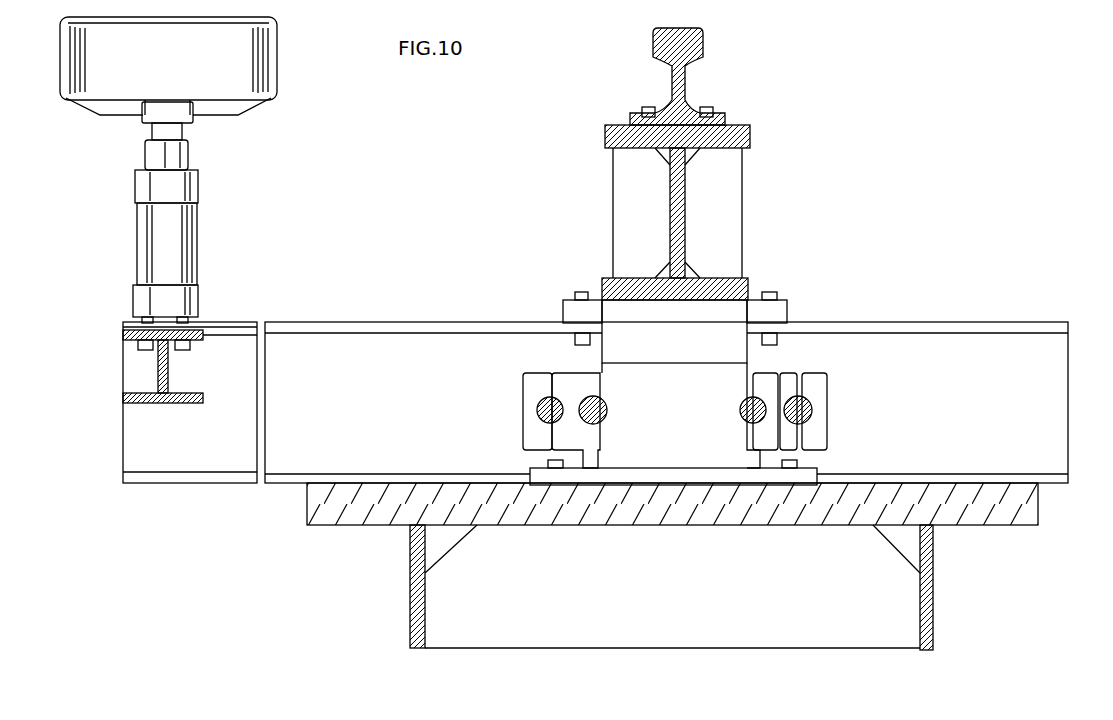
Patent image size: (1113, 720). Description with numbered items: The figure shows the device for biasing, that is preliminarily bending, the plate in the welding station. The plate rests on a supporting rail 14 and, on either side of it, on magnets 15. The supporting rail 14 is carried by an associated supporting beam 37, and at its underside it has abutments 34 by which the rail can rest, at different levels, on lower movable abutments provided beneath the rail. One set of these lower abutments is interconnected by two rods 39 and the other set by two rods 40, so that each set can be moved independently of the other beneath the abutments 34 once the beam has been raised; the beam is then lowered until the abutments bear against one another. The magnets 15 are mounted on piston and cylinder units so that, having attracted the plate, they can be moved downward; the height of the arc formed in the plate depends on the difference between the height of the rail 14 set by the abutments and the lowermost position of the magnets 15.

The supporting rail 14 is at (685, 63).
The magnets 15 is at (269, 63).
The abutments 34 is at (723, 322).
The supporting beam 37 is at (620, 192).
The rods 39 is at (743, 416).
The rods 40 is at (820, 421).